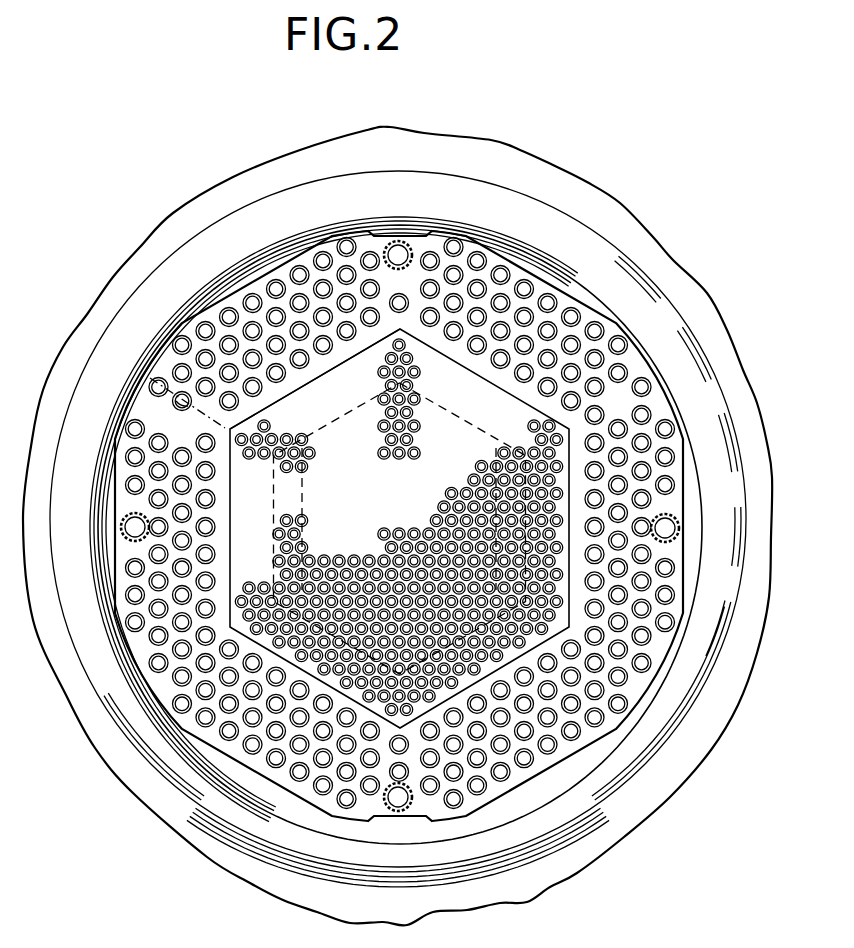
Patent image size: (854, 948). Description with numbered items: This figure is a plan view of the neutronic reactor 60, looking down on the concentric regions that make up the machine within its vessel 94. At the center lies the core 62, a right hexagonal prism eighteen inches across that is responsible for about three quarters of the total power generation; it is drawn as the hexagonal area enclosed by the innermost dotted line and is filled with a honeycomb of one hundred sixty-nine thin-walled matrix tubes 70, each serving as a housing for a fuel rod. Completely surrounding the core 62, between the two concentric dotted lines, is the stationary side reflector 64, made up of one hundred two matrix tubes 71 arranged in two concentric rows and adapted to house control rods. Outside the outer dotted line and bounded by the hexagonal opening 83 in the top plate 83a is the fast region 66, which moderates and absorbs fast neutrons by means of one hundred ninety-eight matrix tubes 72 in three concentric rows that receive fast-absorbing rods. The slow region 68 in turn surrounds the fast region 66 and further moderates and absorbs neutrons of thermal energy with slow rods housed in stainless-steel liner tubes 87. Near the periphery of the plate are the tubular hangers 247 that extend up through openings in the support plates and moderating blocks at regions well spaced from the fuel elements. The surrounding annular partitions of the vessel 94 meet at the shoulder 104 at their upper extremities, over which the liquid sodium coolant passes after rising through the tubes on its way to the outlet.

The neutronic reactor 60 is at (596, 184).
The vessel 94 is at (664, 293).
The shoulder 104 is at (458, 866).
The tubular hangers 247 is at (398, 241).
The top plate 83a is at (295, 263).
The hexagonal opening 83 is at (303, 388).
The liner tubes 87 is at (596, 436).
The slow region 68 is at (187, 406).
The core 62 is at (372, 513).
The matrix tubes 70 is at (436, 499).
The matrix tubes 71 is at (308, 452).
The matrix tubes 72 is at (266, 580).
The fast region 66 is at (269, 463).
The stationary side reflector 64 is at (301, 481).